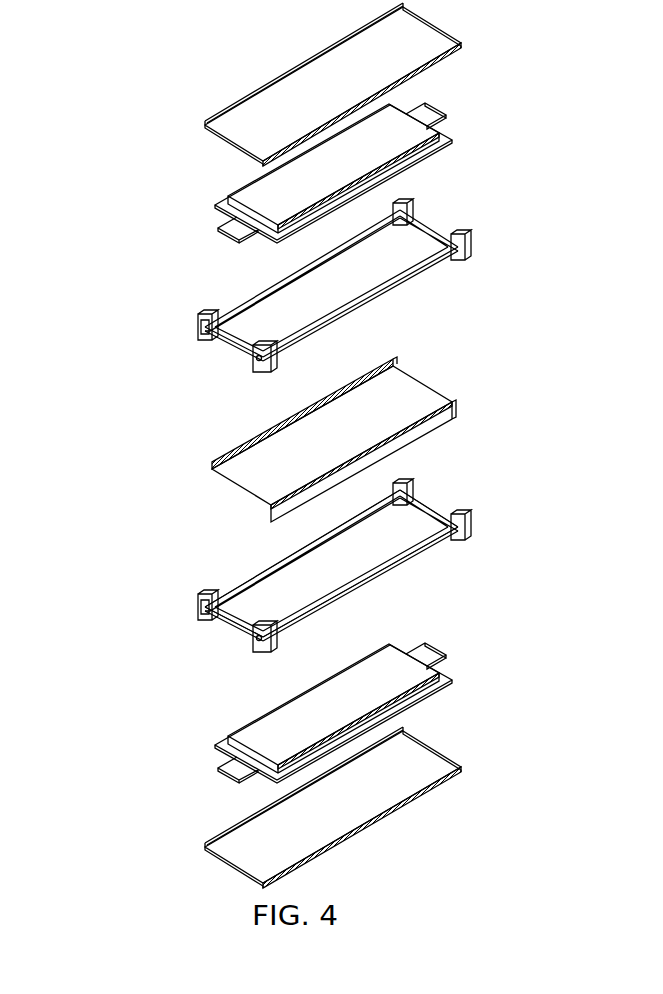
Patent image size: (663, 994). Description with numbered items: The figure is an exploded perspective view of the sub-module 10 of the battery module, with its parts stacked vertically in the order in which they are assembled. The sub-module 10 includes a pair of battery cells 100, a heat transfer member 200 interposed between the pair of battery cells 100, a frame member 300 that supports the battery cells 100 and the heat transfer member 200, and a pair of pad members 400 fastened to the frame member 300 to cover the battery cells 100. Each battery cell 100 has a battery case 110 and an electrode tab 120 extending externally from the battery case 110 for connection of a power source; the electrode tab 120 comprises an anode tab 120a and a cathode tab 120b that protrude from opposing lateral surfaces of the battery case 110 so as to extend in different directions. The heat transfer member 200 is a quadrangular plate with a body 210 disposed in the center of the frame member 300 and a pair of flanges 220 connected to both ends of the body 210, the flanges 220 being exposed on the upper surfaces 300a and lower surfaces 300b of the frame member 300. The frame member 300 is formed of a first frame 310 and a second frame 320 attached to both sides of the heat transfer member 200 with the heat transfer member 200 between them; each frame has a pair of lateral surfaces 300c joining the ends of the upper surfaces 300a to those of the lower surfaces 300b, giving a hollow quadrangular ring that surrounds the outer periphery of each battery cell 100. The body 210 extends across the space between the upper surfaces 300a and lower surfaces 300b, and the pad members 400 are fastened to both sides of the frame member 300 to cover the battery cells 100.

The sub-module 10 is at (223, 47).
The battery cell 100 is at (352, 441).
The battery case 110 is at (257, 187).
The electrode tab 120 is at (393, 171).
The anode tab 120a is at (245, 224).
The cathode tab 120b is at (446, 114).
The heat transfer member 200 is at (320, 425).
The body 210 is at (412, 393).
The flange 220 is at (384, 367).
The frame member 300 is at (91, 283).
The upper surface 300a is at (232, 305).
The lower surface 300b is at (314, 339).
The lateral surface 300c is at (234, 350).
The first frame 310 is at (283, 442).
The second frame 320 is at (184, 595).
The pad member 400 is at (298, 445).